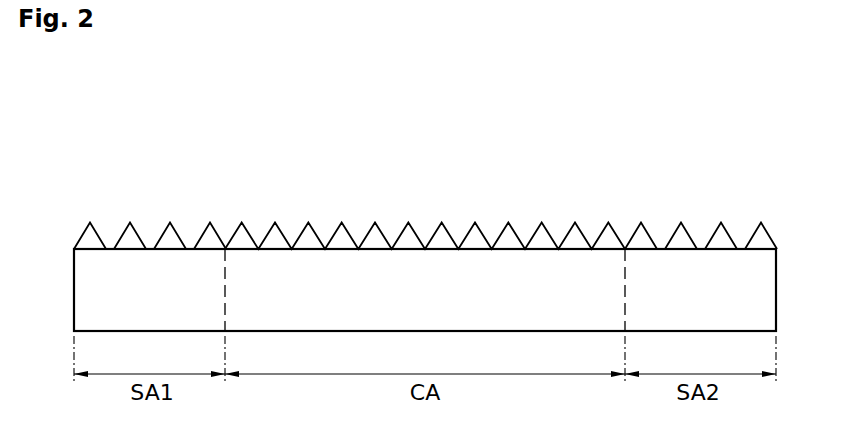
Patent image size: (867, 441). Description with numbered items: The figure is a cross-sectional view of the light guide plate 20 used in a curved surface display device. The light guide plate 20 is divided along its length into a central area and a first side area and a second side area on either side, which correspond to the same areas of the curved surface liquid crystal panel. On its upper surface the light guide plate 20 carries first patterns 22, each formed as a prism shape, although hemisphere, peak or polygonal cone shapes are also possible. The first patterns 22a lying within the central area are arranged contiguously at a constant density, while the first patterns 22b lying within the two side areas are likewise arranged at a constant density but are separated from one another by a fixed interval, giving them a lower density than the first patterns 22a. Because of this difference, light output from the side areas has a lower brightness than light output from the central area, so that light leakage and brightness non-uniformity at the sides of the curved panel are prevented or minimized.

The light guide plate 20 is at (75, 292).
The first patterns 22 is at (322, 106).
The first patterns on the central area 22a is at (309, 224).
The first patterns on the side areas 22b is at (170, 224).